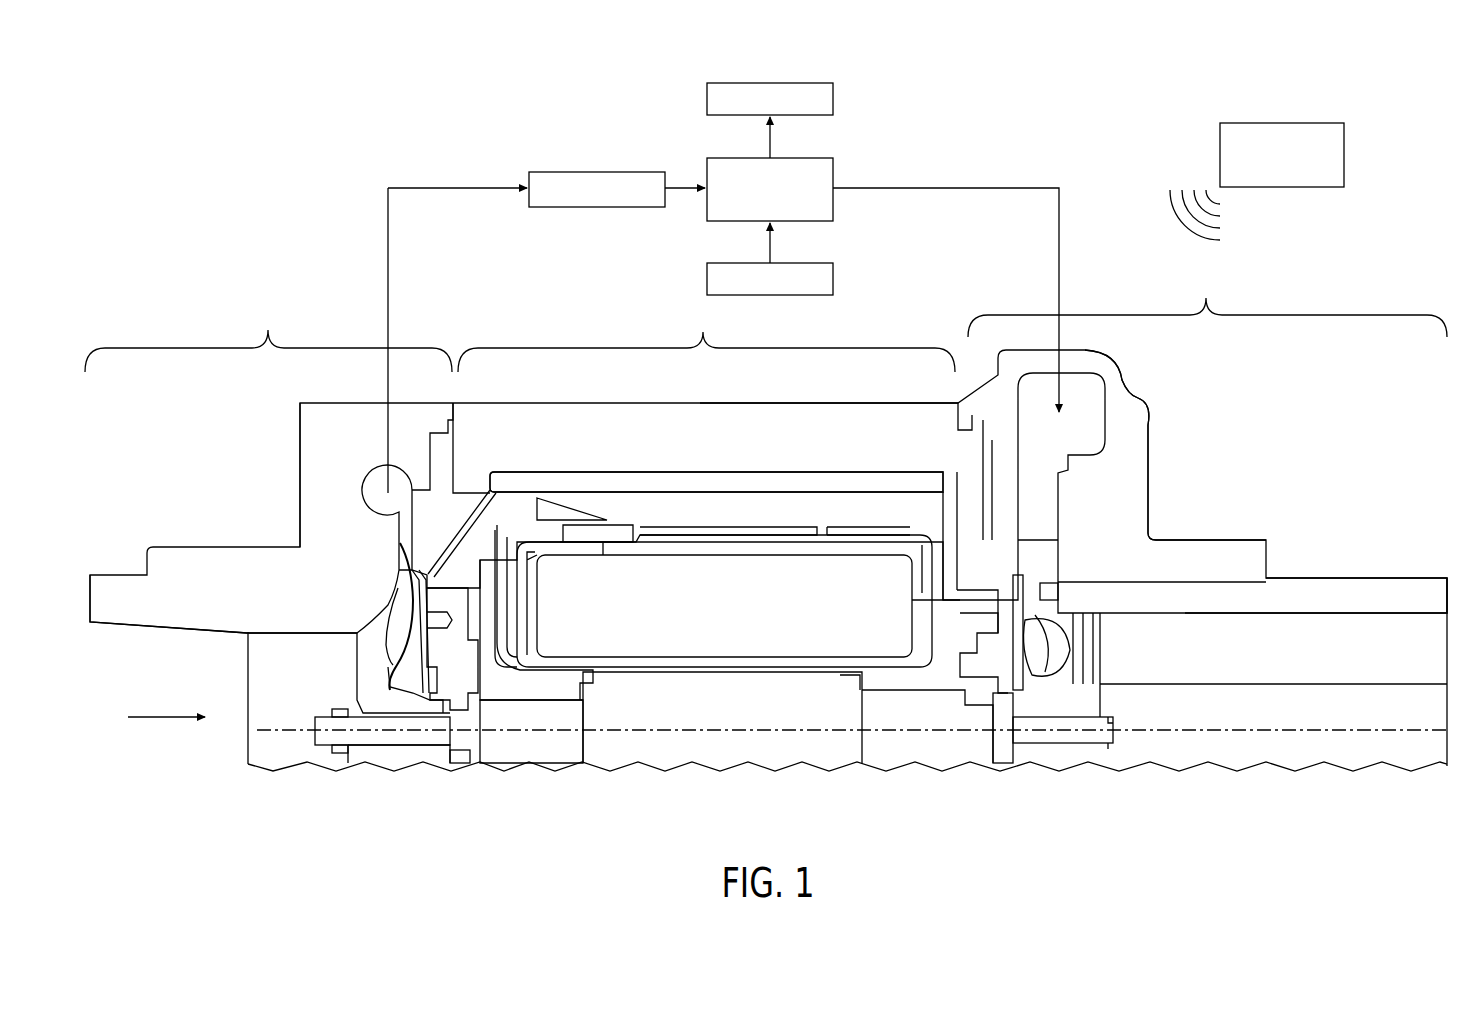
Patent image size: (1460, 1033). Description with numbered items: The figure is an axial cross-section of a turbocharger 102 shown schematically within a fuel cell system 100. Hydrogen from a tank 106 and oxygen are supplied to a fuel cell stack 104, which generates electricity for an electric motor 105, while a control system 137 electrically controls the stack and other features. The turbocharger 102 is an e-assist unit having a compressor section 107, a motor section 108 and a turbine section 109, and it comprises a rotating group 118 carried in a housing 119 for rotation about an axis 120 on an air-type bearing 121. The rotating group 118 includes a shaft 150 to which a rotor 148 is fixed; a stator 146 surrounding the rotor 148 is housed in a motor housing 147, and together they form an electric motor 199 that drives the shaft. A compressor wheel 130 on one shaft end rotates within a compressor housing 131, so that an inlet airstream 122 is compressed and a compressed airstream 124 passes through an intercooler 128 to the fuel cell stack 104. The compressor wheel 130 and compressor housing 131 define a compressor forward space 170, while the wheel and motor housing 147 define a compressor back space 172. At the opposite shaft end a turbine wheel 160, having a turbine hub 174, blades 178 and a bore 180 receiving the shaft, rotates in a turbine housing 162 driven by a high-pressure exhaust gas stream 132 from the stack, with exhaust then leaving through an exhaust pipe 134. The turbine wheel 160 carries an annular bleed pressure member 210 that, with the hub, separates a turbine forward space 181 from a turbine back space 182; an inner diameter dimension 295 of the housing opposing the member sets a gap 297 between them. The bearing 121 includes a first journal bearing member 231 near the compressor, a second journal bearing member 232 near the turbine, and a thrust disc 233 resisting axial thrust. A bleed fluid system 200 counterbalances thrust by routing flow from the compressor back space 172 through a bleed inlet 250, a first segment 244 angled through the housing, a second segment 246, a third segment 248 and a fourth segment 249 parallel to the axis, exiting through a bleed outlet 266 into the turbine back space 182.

The fuel cell system 100 is at (224, 195).
The turbocharger 102 is at (495, 854).
The fuel cell stack 104 is at (833, 168).
The electric motor 105 is at (833, 97).
The tank 106 is at (833, 277).
The compressor section 107 is at (268, 333).
The motor section 108 is at (706, 335).
The turbine section 109 is at (1207, 300).
The rotating group 118 is at (358, 712).
The housing 119 is at (768, 491).
The axis 120 is at (1157, 733).
The bearing 121 is at (545, 612).
The inlet airstream 122 is at (165, 723).
The compressed airstream 124 is at (385, 262).
The intercooler 128 is at (600, 172).
The compressor wheel 130 is at (413, 707).
The compressor housing 131 is at (224, 630).
The high-pressure exhaust gas stream 132 is at (1059, 210).
The exhaust pipe 134 is at (1357, 578).
The control system 137 is at (1220, 150).
The stator 146 is at (819, 644).
The motor housing 147 is at (897, 405).
The rotor 148 is at (718, 668).
The shaft 150 is at (493, 762).
The turbine wheel 160 is at (1090, 687).
The turbine housing 162 is at (1153, 437).
The compressor forward space 170 is at (383, 637).
The compressor back space 172 is at (408, 613).
The turbine hub 174 is at (1026, 707).
The blades 178 is at (1088, 673).
The bore 180 is at (1040, 727).
The turbine forward space 181 is at (1058, 593).
The turbine back space 182 is at (1000, 615).
The electric motor 199 is at (775, 549).
The bleed fluid system 200 is at (480, 428).
The bleed pressure member 210 is at (1144, 565).
The first journal bearing member 231 is at (567, 703).
The second journal bearing member 232 is at (900, 752).
The thrust disc 233 is at (482, 700).
The first segment 244 is at (420, 570).
The second segment 246 is at (570, 478).
The third segment 248 is at (942, 520).
The fourth segment 249 is at (960, 600).
The bleed inlet 250 is at (458, 545).
The bleed outlet 266 is at (993, 593).
The inner diameter dimension 295 is at (1222, 583).
The gap 297 is at (1013, 570).